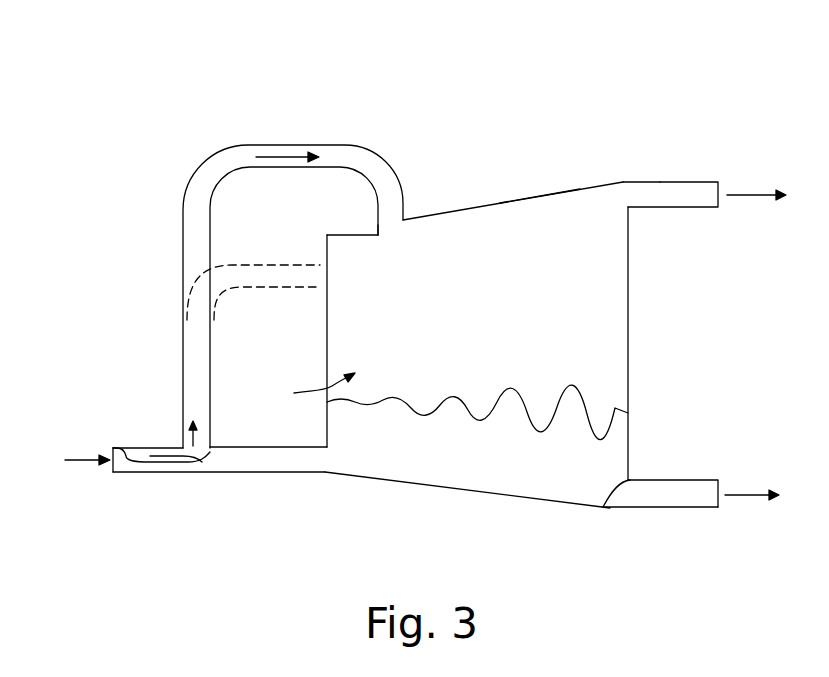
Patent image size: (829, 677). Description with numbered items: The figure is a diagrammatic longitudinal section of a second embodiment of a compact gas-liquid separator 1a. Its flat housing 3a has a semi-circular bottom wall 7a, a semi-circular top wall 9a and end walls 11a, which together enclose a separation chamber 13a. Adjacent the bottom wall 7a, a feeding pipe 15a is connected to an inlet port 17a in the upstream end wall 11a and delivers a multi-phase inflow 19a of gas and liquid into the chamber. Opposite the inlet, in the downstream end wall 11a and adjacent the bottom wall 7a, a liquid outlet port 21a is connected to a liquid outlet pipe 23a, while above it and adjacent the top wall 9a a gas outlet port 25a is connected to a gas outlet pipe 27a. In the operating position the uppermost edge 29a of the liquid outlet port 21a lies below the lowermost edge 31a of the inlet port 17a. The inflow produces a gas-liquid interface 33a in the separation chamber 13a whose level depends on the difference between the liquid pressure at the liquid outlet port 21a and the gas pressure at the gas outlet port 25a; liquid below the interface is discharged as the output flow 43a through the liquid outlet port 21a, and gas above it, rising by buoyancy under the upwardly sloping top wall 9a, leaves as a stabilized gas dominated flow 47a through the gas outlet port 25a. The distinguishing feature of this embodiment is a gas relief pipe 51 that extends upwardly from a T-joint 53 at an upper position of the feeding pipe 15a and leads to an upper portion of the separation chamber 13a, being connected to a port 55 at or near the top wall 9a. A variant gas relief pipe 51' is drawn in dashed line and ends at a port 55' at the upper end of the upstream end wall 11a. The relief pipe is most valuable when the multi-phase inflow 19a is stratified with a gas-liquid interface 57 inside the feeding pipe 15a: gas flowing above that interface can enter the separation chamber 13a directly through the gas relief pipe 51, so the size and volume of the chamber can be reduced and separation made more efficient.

The gas-liquid separator 1a is at (452, 111).
The flat housing 3a is at (474, 203).
The bottom wall 7a is at (455, 489).
The top wall 9a is at (536, 195).
The end wall 11a is at (629, 300).
The separation chamber 13a is at (308, 388).
The feeding pipe 15a is at (127, 474).
The inlet port 17a is at (322, 460).
The multi-phase inflow 19a is at (72, 457).
The liquid outlet port 21a is at (629, 497).
The liquid outlet pipe 23a is at (673, 480).
The gas outlet port 25a is at (614, 192).
The gas outlet pipe 27a is at (672, 182).
The uppermost edge 29a is at (603, 506).
The lowermost edge 31a is at (325, 470).
The gas-liquid interface 33a is at (438, 402).
The output flow 43a is at (742, 495).
The gas dominated flow 47a is at (742, 195).
The gas relief pipe 51 is at (265, 296).
The gas relief pipe variant 51' is at (253, 267).
The T-joint 53 is at (183, 445).
The port 55 is at (399, 186).
The port 55' is at (347, 288).
The gas-liquid interface 57 is at (123, 450).